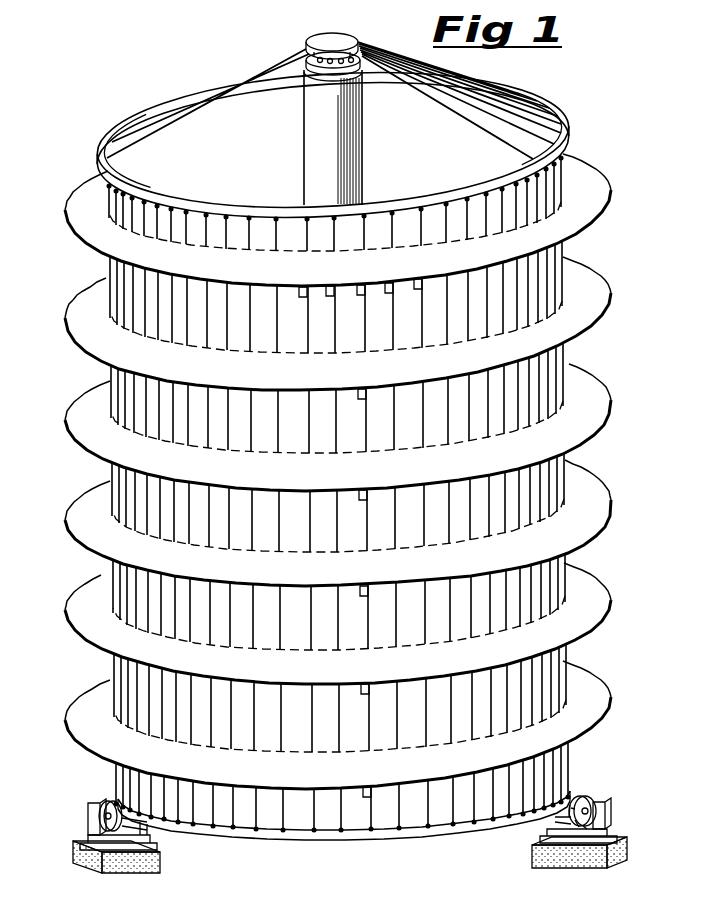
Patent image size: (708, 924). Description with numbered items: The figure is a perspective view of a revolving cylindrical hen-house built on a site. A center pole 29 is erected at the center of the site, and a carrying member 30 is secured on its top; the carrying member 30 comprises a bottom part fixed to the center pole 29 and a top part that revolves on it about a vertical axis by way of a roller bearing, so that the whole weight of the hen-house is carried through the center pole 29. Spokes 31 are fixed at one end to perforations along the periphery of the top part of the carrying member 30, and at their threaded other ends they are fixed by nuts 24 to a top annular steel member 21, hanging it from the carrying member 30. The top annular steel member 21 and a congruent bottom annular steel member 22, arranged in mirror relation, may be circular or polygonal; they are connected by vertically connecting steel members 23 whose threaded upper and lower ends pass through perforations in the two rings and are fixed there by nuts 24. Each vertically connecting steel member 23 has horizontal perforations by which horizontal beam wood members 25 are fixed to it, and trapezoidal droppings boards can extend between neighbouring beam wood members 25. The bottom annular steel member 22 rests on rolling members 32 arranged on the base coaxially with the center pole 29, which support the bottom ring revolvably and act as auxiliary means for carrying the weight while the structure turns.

The top annular steel member 21 is at (543, 108).
The bottom annular steel member 22 is at (415, 838).
The vertically connecting steel member 23 is at (369, 334).
The nut 24 is at (203, 213).
The horizontal beam wood member 25 is at (299, 291).
The center pole 29 is at (318, 132).
The carrying member 30 is at (332, 40).
The spoke 31 is at (259, 70).
The rolling member 32 is at (593, 802).